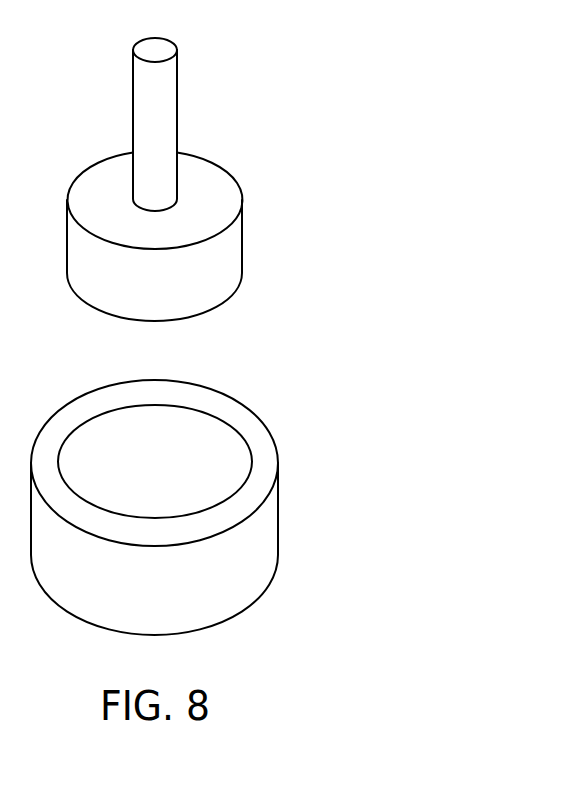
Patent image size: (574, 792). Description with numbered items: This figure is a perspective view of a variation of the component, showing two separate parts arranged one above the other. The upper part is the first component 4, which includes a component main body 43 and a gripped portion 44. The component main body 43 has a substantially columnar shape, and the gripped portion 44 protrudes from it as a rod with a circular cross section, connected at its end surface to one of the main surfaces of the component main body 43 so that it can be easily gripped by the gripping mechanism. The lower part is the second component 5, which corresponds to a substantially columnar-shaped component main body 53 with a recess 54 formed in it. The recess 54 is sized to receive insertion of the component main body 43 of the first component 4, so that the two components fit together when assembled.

The first component 4 is at (238, 179).
The component main body 43 is at (242, 260).
The gripped portion 44 is at (177, 90).
The second component 5 is at (233, 489).
The component main body 53 is at (278, 530).
The recess 54 is at (102, 458).